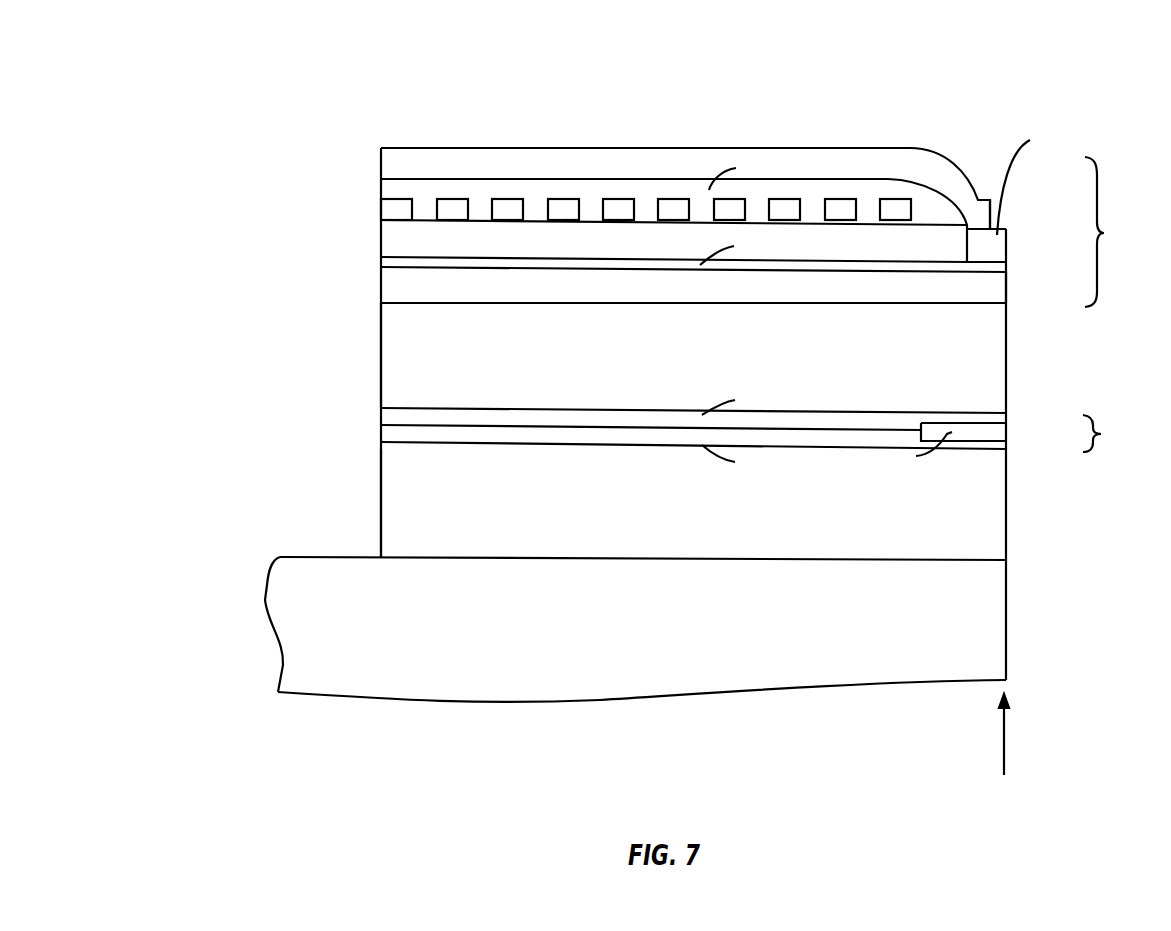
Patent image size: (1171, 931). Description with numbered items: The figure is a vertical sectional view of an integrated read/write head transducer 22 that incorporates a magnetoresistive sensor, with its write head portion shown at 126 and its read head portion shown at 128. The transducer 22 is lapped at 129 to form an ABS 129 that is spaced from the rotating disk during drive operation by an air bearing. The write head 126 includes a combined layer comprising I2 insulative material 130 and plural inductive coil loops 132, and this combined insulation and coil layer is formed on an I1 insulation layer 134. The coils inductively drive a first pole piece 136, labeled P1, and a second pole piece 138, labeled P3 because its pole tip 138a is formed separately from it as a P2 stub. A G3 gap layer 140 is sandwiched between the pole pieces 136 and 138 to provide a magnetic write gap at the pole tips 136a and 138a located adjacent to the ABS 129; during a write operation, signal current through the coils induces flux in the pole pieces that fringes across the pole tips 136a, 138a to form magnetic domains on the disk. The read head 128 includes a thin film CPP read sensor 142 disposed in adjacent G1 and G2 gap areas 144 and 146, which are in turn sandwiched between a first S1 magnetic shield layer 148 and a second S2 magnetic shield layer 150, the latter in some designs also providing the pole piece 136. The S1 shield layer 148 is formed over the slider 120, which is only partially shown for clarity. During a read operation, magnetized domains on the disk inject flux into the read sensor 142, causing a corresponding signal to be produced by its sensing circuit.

The transducer 22 is at (803, 85).
The slider 120 is at (265, 600).
The write head 126 is at (1115, 232).
The read head 128 is at (1114, 434).
The ABS 129 is at (1009, 142).
The I2 insulative material 130 is at (381, 186).
The inductive coil loops 132 is at (381, 216).
The I1 insulation layer 134 is at (381, 250).
The first pole piece 136 is at (381, 290).
The pole tip 136a is at (1002, 301).
The second pole piece 138 is at (381, 160).
The pole tip 138a is at (990, 253).
The G3 gap layer 140 is at (381, 263).
The CPP read sensor 142 is at (1007, 430).
The G1 gap area 144 is at (381, 435).
The G2 gap area 146 is at (381, 418).
The S1 magnetic shield layer 148 is at (381, 515).
The S2 magnetic shield layer 150 is at (381, 355).